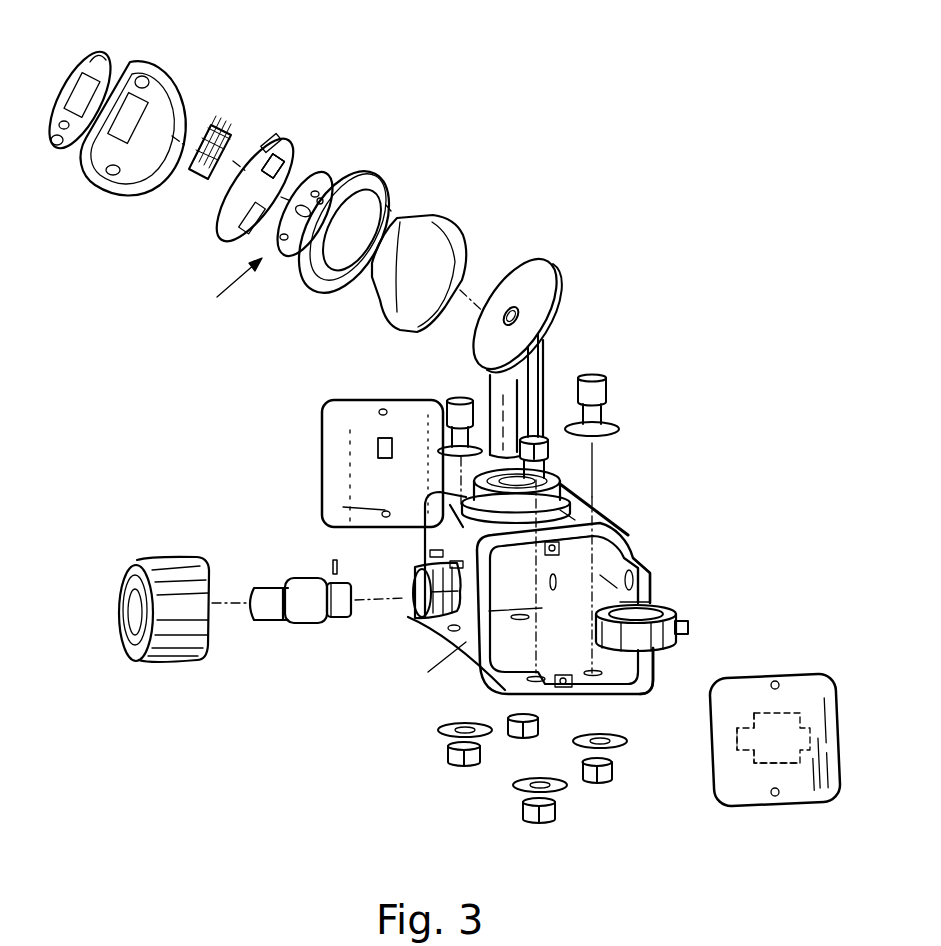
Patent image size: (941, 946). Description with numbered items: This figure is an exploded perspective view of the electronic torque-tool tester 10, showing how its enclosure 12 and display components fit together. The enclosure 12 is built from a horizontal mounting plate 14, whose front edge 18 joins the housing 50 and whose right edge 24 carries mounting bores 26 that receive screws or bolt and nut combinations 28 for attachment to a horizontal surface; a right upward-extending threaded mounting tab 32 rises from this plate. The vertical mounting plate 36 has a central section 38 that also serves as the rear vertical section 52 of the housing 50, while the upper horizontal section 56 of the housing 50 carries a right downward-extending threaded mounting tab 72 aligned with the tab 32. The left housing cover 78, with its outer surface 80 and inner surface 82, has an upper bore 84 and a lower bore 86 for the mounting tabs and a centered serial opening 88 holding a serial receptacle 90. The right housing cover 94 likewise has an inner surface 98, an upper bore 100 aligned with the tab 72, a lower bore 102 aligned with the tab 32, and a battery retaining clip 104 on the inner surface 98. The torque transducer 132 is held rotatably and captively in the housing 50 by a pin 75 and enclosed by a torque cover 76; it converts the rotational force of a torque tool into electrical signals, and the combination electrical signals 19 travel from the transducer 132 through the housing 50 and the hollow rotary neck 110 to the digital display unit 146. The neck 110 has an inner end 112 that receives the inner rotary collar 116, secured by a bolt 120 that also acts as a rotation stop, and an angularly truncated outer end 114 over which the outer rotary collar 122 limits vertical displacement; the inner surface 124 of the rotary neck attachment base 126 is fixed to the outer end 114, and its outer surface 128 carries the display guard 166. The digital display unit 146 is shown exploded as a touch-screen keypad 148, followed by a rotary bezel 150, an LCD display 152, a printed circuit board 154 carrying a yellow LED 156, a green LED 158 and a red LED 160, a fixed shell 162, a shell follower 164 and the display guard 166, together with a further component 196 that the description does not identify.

The electronic torque-tool tester 10 is at (480, 58).
The enclosure 12 is at (452, 672).
The horizontal mounting plate 14 is at (492, 684).
The front edge 18 is at (439, 643).
The combination electrical signals 19 is at (470, 283).
The right edge 24 is at (557, 695).
The mounting bores 26 is at (543, 695).
The screws or bolt and nut combinations 28 is at (608, 382).
The right upward-extending threaded mounting tab 32 is at (650, 663).
The vertical mounting plate 36 is at (653, 588).
The central section 38 is at (652, 566).
The housing 50 is at (429, 667).
The rear vertical section 52 is at (642, 550).
The upper horizontal section 56 is at (562, 520).
The right downward-extending threaded mounting tab 72 is at (572, 535).
The pin 75 is at (330, 565).
The torque cover 76 is at (181, 641).
The left housing cover 78 is at (321, 488).
The outer surface 80 is at (355, 426).
The inner surface 82 is at (343, 507).
The upper bore 84 is at (378, 408).
The lower bore 86 is at (383, 518).
The RS232 opening 88 is at (377, 447).
The RS232 receptacle 90 is at (385, 448).
The right housing cover 94 is at (738, 747).
The inner surface 98 is at (740, 718).
The upper bore 100 is at (777, 683).
The lower bore 102 is at (772, 792).
The battery retaining clip 104 is at (753, 710).
The hollow rotary neck 110 is at (540, 347).
The inner end 112 is at (570, 478).
The outer end 114 is at (550, 303).
The inner rotary collar 116 is at (681, 627).
The bolt 120 is at (689, 637).
The outer rotary collar 122 is at (553, 458).
The inner surface 124 is at (550, 302).
The rotary neck attachment base 126 is at (550, 282).
The outer surface 128 is at (550, 263).
The torque transducer 132 is at (272, 620).
The digital display unit 146 is at (223, 298).
The touch-screen keypad 148 is at (112, 48).
The rotary bezel 150 is at (168, 77).
The LCD display 152 is at (227, 127).
The printed circuit board 154 is at (285, 137).
The yellow LED 156 is at (285, 138).
The green LED 158 is at (273, 166).
The red LED 160 is at (273, 166).
The fixed shell 162 is at (327, 170).
The shell follower 164 is at (387, 184).
The display guard 166 is at (420, 224).
The emblem tab 196 is at (730, 753).